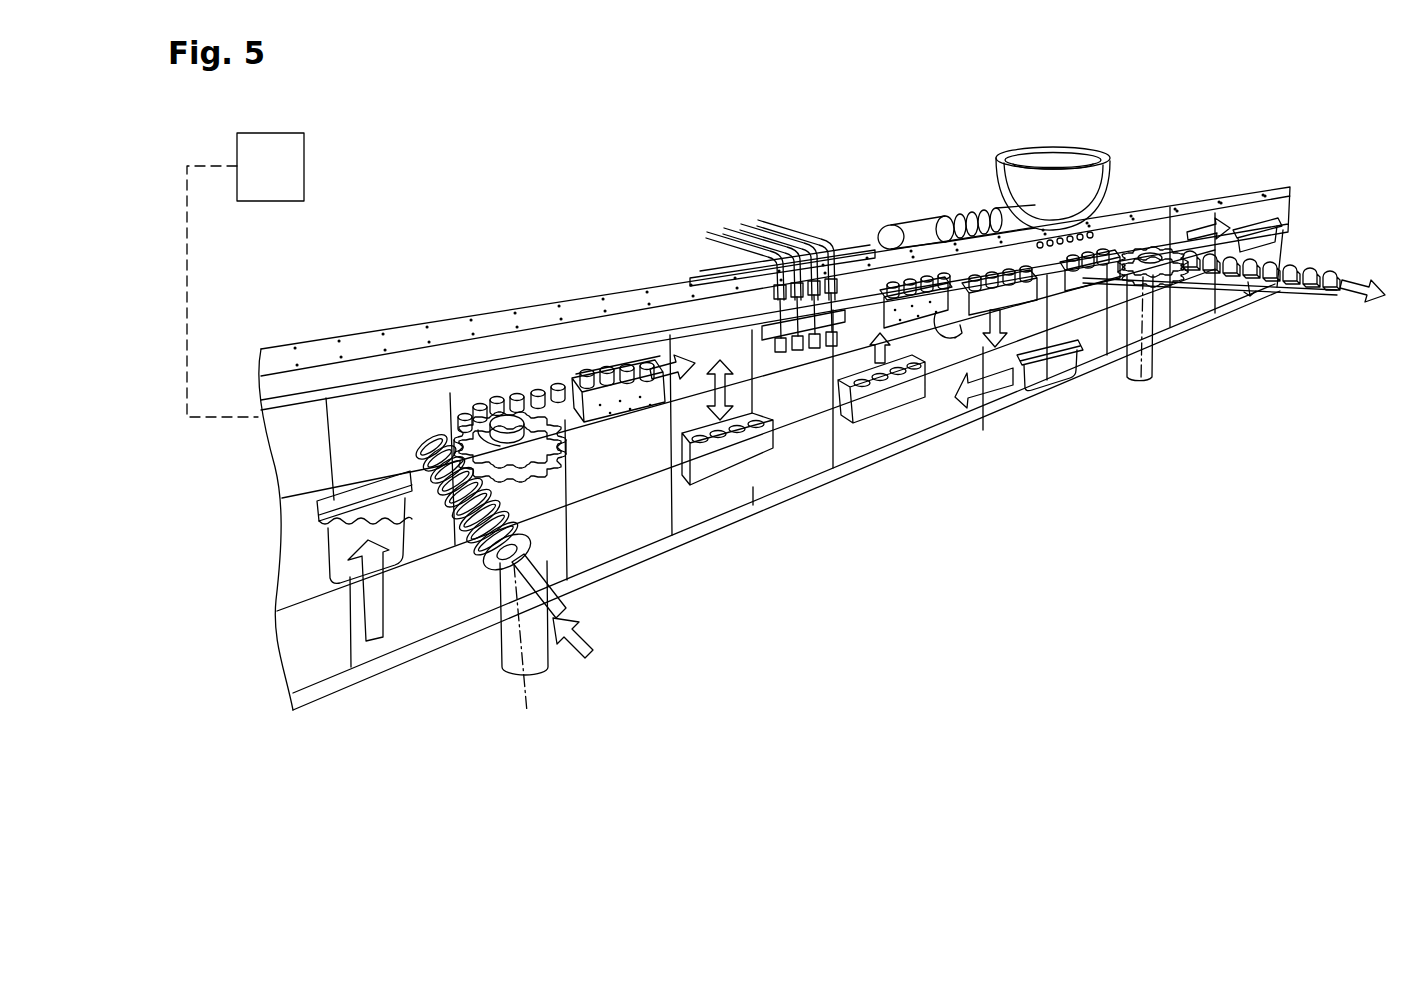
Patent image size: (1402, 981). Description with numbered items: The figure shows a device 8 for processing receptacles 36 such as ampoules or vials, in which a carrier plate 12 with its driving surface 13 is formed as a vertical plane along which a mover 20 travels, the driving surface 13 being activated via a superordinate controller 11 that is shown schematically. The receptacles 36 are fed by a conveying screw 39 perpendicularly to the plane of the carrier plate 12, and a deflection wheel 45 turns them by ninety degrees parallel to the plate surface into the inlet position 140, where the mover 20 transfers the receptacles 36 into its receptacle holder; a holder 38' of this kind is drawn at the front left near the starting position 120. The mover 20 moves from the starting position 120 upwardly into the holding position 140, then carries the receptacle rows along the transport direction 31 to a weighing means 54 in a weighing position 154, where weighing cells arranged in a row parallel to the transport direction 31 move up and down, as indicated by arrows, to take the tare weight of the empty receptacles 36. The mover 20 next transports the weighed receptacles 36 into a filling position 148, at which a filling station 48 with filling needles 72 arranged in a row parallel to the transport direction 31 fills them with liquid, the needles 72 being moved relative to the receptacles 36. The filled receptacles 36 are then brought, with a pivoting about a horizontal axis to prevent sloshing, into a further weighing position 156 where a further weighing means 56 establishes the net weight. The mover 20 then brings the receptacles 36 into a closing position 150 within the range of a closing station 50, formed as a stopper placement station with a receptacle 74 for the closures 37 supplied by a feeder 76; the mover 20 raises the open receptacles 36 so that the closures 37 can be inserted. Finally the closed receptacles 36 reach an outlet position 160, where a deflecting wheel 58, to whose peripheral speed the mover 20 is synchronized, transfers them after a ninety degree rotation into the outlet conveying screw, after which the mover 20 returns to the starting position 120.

The device 8 is at (300, 277).
The superordinate controller 11 is at (305, 145).
The carrier plate 12 is at (310, 443).
The driving surface 13 is at (771, 458).
The mover 20 is at (335, 555).
The transport direction 31 is at (680, 372).
The receptacles 36 is at (567, 405).
The closures 37 is at (1083, 157).
The gripper 38' is at (301, 497).
The conveying screw 39 is at (512, 552).
The deflection wheel 45 is at (510, 397).
The filling station 48 is at (747, 190).
The closing station 50 is at (995, 225).
The weighing means 54 is at (720, 462).
The further weighing means 56 is at (898, 395).
The deflecting wheel 58 is at (1173, 248).
The filling needles 72 is at (848, 293).
The receptacle for the closures 74 is at (1030, 155).
The feeder 76 is at (980, 220).
The starting position 120 is at (298, 577).
The inlet position 140 is at (578, 456).
The filling position 148 is at (779, 398).
The closing position 150 is at (985, 335).
The weighing position 154 is at (715, 342).
The further weighing position 156 is at (872, 328).
The outlet position 160 is at (1103, 233).